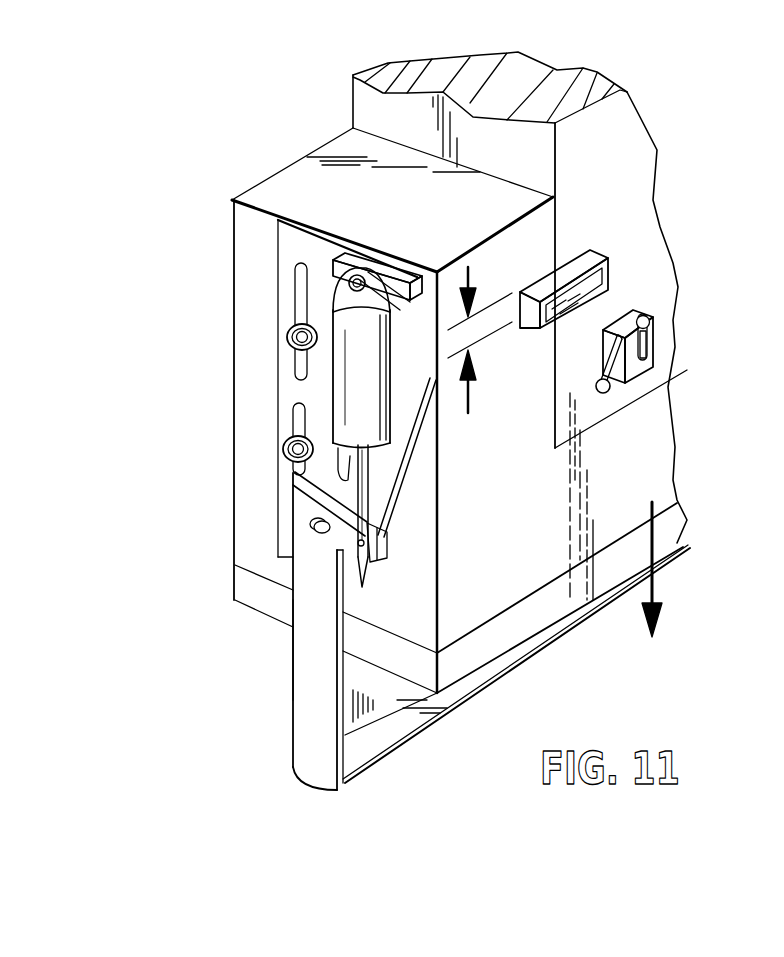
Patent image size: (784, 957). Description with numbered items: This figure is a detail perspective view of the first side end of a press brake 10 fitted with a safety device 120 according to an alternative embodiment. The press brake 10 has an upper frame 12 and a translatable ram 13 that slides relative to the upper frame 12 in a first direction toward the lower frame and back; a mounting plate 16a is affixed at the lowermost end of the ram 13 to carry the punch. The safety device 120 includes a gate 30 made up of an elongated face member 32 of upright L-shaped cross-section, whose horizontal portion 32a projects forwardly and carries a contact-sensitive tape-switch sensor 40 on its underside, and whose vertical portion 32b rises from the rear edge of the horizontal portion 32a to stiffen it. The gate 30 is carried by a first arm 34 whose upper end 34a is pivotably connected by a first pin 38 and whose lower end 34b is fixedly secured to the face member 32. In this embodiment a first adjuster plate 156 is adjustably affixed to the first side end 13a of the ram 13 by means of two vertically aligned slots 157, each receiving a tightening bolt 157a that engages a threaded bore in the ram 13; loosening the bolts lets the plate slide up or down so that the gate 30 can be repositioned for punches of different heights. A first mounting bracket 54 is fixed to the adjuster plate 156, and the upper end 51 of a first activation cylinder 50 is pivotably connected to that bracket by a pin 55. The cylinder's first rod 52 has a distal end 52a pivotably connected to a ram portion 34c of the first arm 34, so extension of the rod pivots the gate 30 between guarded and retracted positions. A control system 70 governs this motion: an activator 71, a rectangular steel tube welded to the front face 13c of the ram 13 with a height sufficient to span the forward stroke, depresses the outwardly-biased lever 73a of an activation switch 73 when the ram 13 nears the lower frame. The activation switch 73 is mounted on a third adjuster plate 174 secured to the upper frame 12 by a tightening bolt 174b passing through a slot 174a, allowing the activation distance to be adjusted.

The press brake 10 is at (196, 130).
The upper frame 12 is at (626, 140).
The ram 13 is at (330, 160).
The first side end 13a is at (252, 248).
The front face 13c is at (538, 485).
The mounting plate 16a is at (246, 583).
The gate 30 is at (270, 747).
The face member 32 is at (472, 711).
The horizontal portion 32a is at (543, 635).
The vertical portion 32b is at (380, 710).
The first arm 34 is at (312, 707).
The upper end of first arm 34a is at (297, 478).
The lower end of first arm 34b is at (342, 787).
The ram portion of first arm 34c is at (384, 556).
The first pin 38 is at (311, 524).
The sensor 40 is at (308, 780).
The first activation cylinder 50 is at (322, 392).
The upper end of first activation cylinder 51 is at (330, 303).
The first rod 52 is at (366, 470).
The distal end of first rod 52a is at (364, 585).
The first mounting bracket 54 is at (385, 268).
The pin 55 is at (355, 282).
The control system 70 is at (558, 246).
The activator 71 is at (530, 316).
The activation switch 73 is at (633, 383).
The lever 73a is at (600, 382).
The safety device 120 is at (270, 664).
The first adjuster plate 156 is at (284, 432).
The slot 157 is at (300, 265).
The tightening bolt 157a is at (288, 337).
The third adjuster plate 174 is at (645, 316).
The slot 174a is at (647, 358).
The tightening bolt 174b is at (653, 320).